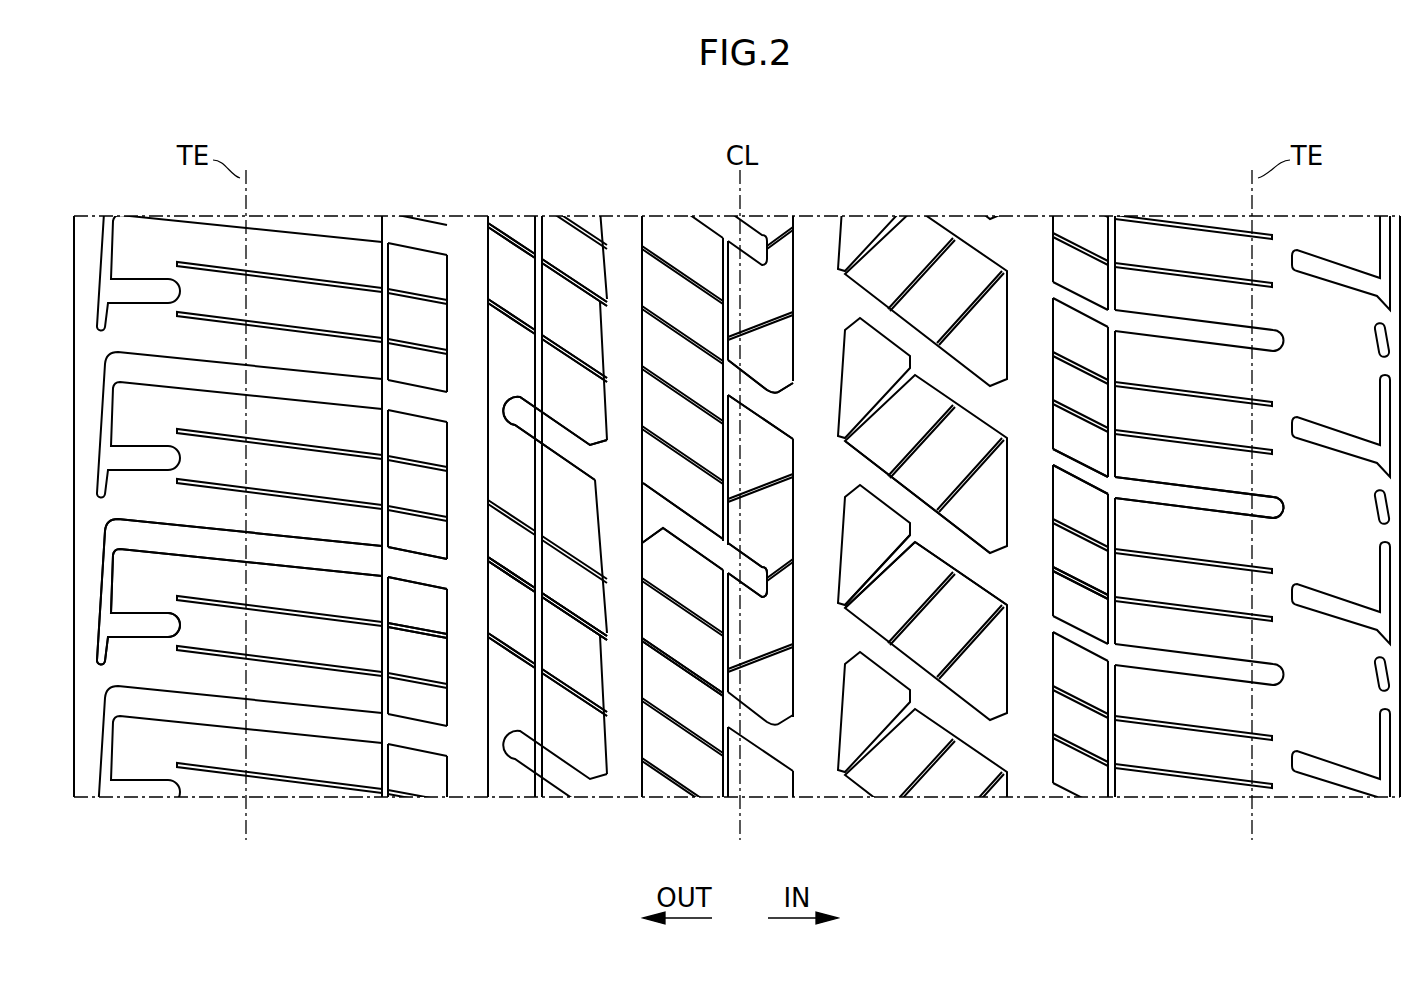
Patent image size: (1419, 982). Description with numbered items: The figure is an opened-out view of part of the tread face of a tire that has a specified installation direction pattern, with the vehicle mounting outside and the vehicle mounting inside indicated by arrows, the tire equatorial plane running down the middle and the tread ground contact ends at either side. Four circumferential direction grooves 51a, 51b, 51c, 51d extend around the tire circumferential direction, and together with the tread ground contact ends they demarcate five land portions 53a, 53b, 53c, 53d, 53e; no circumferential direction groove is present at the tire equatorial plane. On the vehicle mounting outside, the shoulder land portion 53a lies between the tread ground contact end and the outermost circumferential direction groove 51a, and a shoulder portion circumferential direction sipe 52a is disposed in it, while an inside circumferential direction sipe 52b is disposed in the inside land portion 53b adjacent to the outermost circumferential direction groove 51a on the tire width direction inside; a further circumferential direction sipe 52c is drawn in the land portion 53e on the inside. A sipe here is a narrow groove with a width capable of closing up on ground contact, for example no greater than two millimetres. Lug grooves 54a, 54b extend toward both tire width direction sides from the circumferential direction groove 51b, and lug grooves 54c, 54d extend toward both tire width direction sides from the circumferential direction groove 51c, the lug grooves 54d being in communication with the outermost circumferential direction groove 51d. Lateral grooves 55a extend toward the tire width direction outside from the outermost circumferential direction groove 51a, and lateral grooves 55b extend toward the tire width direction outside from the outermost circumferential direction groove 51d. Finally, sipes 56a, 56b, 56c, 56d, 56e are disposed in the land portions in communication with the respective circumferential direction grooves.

The outermost circumferential direction groove 51a is at (485, 262).
The circumferential direction groove 51b is at (633, 265).
The circumferential direction groove 51c is at (800, 263).
The outermost circumferential direction groove 51d is at (1050, 263).
The shoulder portion circumferential direction sipe 52a is at (392, 267).
The inside circumferential direction sipe 52b is at (543, 290).
The circumferential direction sipe 52c is at (1117, 290).
The shoulder land portion 53a is at (312, 257).
The inside land portion 53b is at (570, 247).
The land portion 53c is at (667, 240).
The land portion 53d is at (888, 258).
The land portion 53e is at (1188, 247).
The lug groove 54a is at (572, 500).
The lug groove 54b is at (670, 540).
The lug groove 54c is at (763, 420).
The lug groove 54d is at (870, 493).
The lateral groove 55a is at (317, 570).
The lateral groove 55b is at (1185, 510).
The sipe 56a is at (417, 633).
The sipe 56b is at (567, 617).
The sipe 56c is at (683, 667).
The sipe 56d is at (875, 587).
The sipe 56e is at (1078, 590).